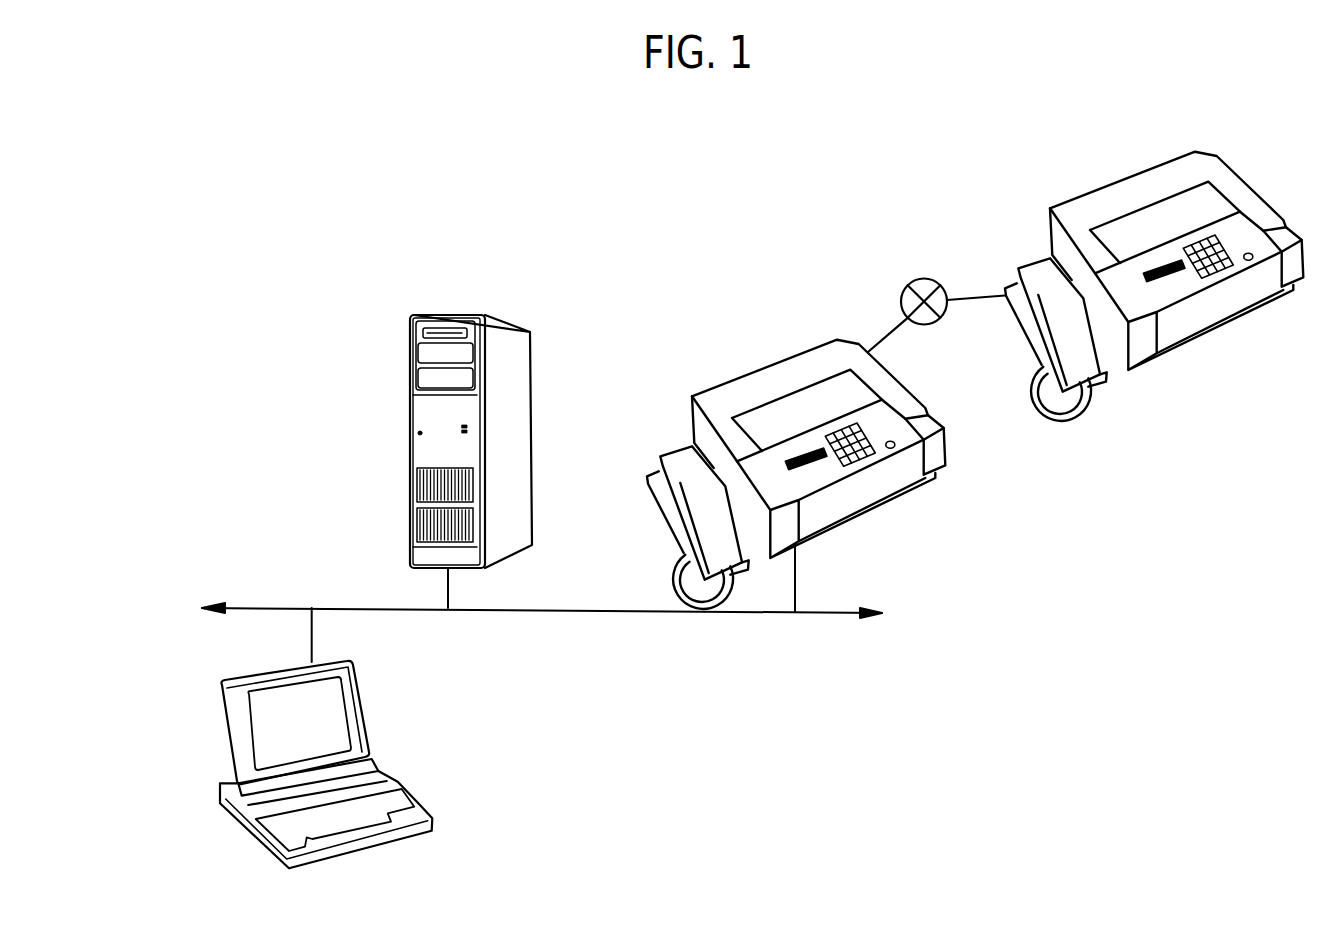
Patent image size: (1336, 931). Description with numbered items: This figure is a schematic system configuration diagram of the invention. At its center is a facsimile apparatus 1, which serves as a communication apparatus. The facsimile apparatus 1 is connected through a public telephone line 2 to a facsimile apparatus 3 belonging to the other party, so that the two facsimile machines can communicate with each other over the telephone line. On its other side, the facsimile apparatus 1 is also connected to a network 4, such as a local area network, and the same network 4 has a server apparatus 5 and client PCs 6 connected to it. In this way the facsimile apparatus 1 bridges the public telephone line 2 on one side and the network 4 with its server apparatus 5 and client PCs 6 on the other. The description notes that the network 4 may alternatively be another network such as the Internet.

The facsimile apparatus 1 is at (748, 372).
The public telephone line 2 is at (910, 280).
The facsimile apparatus of the other party 3 is at (1058, 206).
The network 4 is at (823, 613).
The server apparatus 5 is at (410, 376).
The client PCs 6 is at (365, 705).